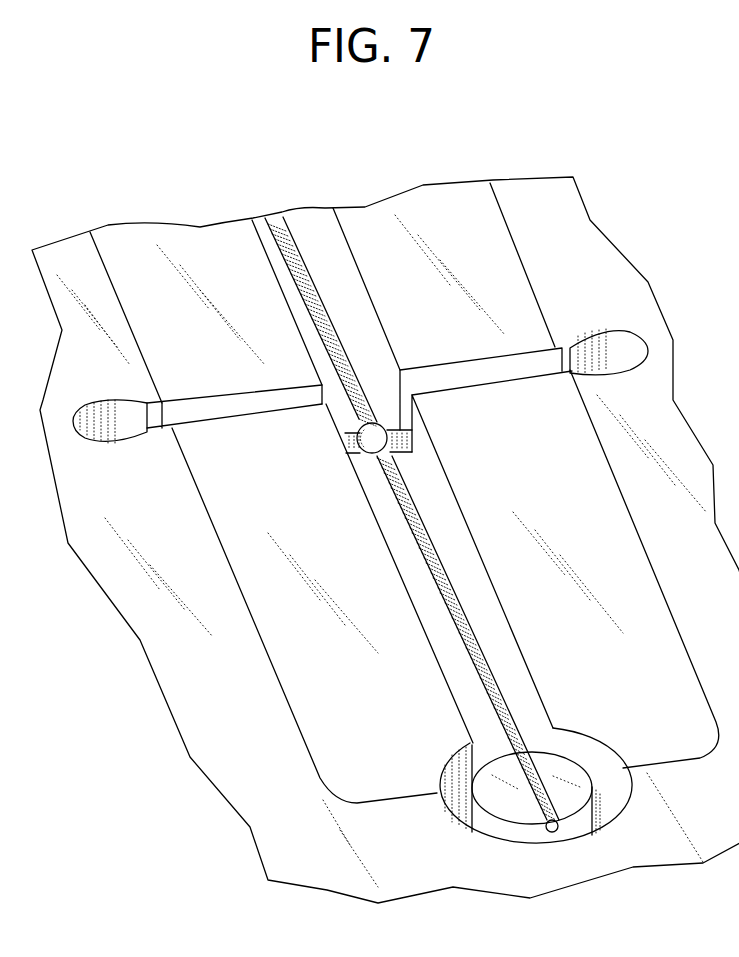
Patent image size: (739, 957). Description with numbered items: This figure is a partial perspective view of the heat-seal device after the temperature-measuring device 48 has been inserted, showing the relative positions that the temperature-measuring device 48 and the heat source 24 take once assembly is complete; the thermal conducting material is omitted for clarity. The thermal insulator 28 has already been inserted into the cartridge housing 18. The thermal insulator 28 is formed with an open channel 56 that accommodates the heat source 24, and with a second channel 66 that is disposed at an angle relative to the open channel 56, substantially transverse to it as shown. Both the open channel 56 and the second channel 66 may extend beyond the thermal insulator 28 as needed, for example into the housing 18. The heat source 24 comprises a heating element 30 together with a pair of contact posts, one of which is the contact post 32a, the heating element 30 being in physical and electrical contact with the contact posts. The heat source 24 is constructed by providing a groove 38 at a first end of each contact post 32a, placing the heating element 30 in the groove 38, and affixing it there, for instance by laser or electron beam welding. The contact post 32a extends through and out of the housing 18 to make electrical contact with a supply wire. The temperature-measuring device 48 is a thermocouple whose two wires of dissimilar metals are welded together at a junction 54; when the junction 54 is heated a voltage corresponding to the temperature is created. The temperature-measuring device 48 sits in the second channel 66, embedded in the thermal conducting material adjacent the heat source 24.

The housing 18 is at (533, 198).
The thermal insulator 28 is at (420, 215).
The heating element 30 is at (290, 268).
The open channel 56 is at (308, 242).
The second channel 66 is at (232, 407).
The junction 54 is at (380, 424).
The temperature-measuring device 48 is at (400, 453).
The heat source 24 is at (578, 756).
The contact post 32a is at (573, 777).
The groove 38 is at (547, 833).